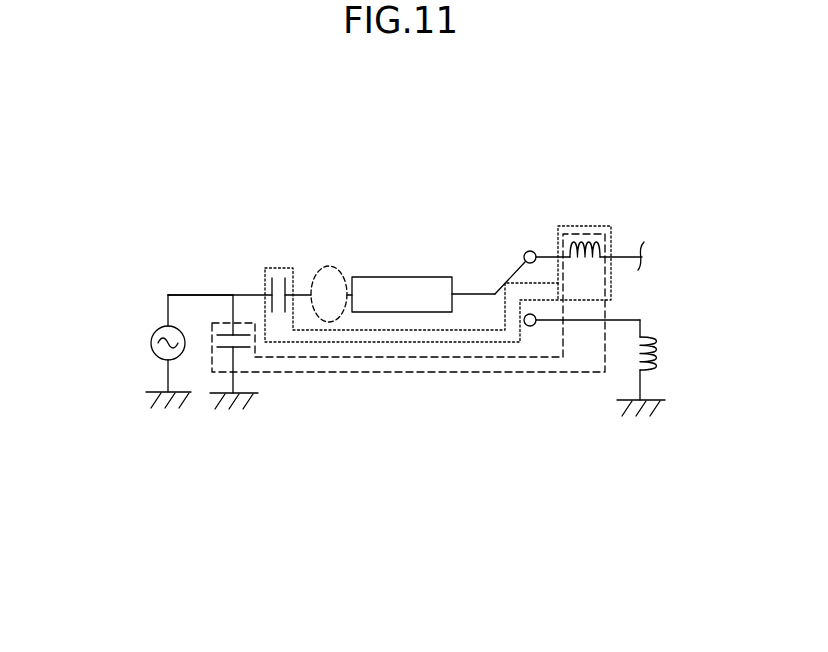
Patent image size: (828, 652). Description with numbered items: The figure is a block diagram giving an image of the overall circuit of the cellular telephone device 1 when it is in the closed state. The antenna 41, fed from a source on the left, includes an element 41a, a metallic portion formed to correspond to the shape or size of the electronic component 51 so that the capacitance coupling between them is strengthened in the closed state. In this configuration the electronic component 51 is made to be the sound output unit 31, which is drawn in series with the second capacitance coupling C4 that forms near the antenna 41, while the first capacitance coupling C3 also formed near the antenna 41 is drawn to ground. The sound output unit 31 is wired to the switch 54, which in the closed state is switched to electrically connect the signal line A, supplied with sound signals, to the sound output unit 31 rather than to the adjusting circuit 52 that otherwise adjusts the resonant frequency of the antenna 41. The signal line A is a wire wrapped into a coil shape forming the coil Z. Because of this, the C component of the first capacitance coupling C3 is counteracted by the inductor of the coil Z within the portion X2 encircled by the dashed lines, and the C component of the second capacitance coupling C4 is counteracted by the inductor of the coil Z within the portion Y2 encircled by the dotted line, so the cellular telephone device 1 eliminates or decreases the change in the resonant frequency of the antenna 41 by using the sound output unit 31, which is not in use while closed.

The cellular telephone device 1 is at (644, 127).
The antenna 41 is at (140, 346).
The element (metallic portion) 41a is at (190, 292).
The first capacitance coupling C3 is at (246, 352).
The second capacitance coupling C4 is at (266, 280).
The portion encircled by the dotted line Y2 is at (284, 266).
The portion encircled by the dotted lines X2 is at (423, 376).
The sound output unit 31 is at (402, 257).
The electronic component 51 is at (390, 276).
The switch 54 is at (505, 261).
The signal line A is at (628, 255).
The coil Z is at (582, 261).
The adjusting circuit 52 is at (670, 353).